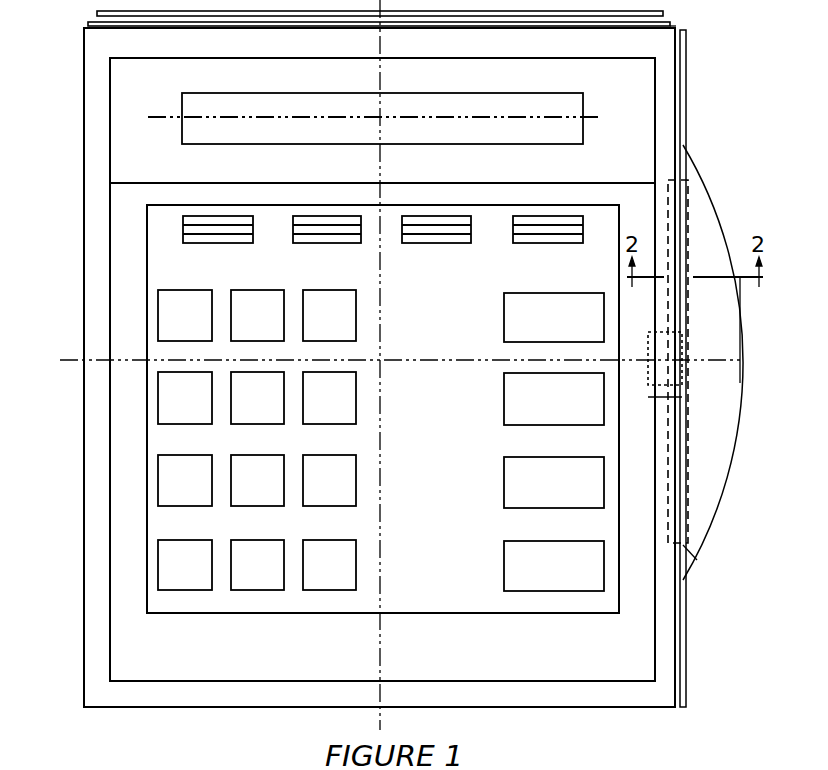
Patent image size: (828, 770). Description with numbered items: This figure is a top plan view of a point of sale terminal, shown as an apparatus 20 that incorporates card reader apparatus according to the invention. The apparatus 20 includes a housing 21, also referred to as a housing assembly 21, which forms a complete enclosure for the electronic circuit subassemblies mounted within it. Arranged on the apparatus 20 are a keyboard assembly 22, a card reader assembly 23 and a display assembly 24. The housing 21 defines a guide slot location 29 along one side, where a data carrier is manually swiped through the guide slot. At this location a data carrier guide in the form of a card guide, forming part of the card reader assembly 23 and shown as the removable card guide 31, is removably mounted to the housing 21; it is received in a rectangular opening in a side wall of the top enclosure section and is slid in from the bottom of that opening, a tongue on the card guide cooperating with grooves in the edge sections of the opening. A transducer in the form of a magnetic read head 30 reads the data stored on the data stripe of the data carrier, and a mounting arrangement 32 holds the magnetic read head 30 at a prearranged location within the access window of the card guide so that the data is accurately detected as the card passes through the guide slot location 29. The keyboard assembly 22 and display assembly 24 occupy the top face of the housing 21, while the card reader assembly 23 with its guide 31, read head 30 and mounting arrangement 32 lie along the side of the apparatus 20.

The apparatus 20 is at (80, 487).
The housing 21 is at (100, 397).
The keyboard assembly 22 is at (556, 606).
The card reader assembly 23 is at (693, 361).
The display assembly 24 is at (640, 106).
The guide slot location 29 is at (683, 195).
The magnetic read head 30 is at (663, 353).
The removable card guide 31 is at (688, 478).
The mounting arrangement 32 is at (667, 397).